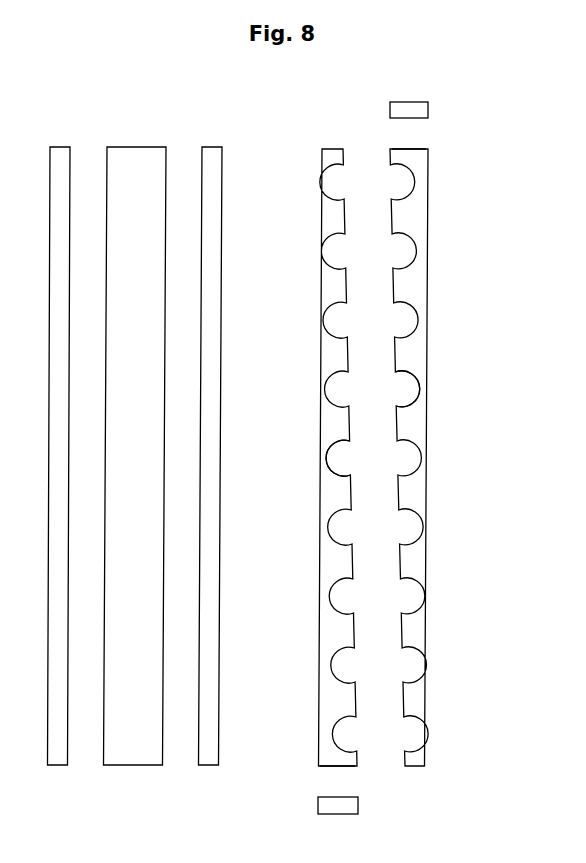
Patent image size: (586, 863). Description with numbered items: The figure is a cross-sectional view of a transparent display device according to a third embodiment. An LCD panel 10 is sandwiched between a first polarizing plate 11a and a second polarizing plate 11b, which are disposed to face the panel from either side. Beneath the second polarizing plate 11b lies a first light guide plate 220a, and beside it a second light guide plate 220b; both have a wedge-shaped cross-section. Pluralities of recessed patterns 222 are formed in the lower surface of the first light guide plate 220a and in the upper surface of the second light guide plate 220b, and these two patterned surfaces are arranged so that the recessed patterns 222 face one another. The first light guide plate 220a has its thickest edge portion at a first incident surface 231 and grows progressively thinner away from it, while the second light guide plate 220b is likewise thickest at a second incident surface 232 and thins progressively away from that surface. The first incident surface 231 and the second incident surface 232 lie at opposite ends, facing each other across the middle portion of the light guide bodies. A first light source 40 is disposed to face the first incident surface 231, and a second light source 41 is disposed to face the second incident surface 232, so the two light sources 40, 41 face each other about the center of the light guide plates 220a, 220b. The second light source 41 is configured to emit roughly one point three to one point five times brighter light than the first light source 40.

The LCD panel 10 is at (136, 147).
The first polarizing plate 11a is at (61, 147).
The second polarizing plate 11b is at (211, 147).
The first light guide plate 220a is at (332, 149).
The second light guide plate 220b is at (428, 213).
The recessed patterns 222 is at (333, 457).
The first incident surface 231 is at (333, 777).
The second incident surface 232 is at (420, 136).
The first light source 40 is at (318, 805).
The second light source 41 is at (428, 110).